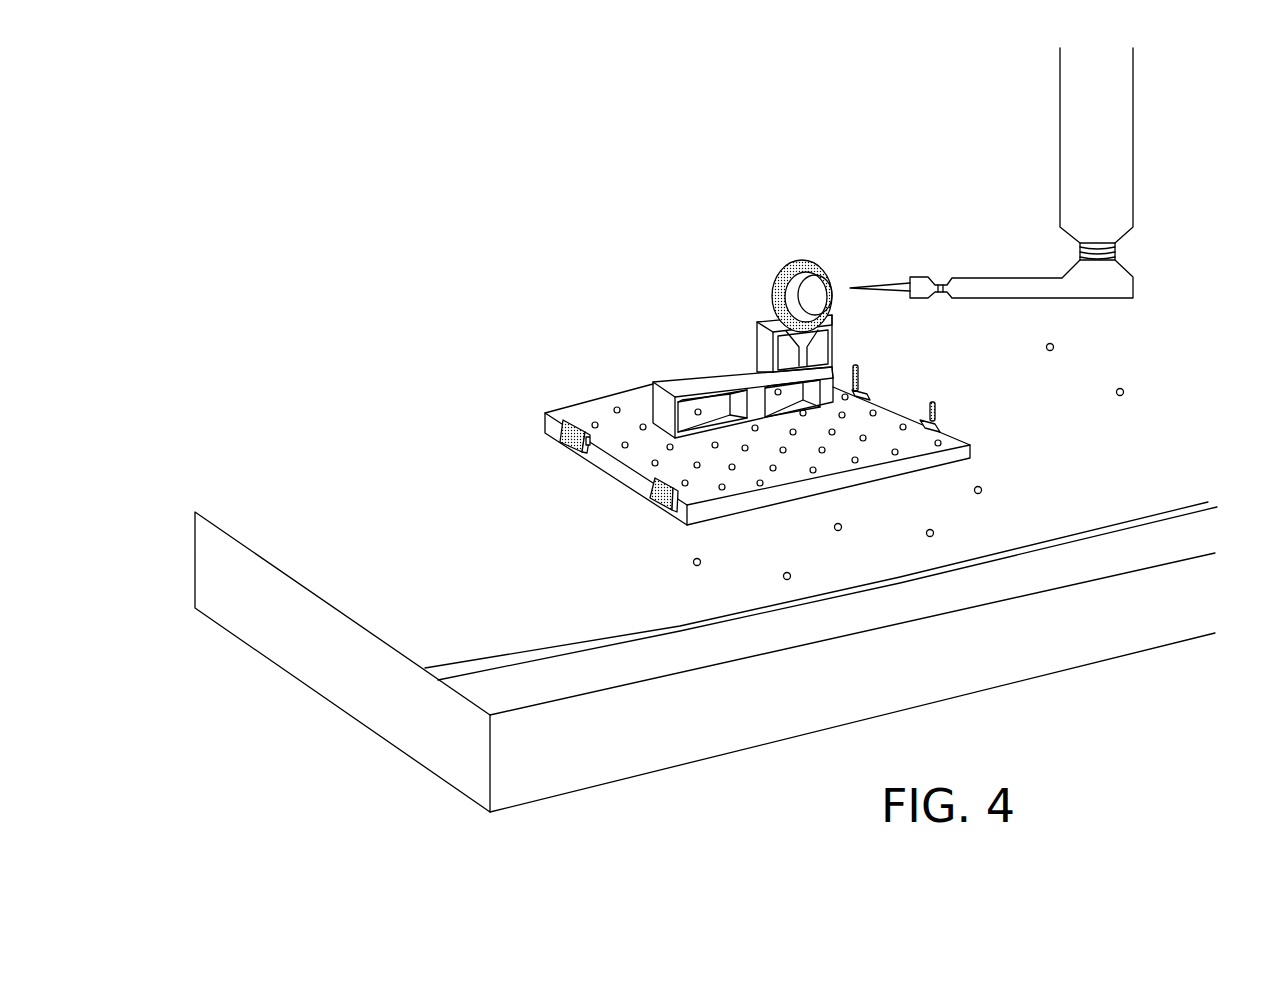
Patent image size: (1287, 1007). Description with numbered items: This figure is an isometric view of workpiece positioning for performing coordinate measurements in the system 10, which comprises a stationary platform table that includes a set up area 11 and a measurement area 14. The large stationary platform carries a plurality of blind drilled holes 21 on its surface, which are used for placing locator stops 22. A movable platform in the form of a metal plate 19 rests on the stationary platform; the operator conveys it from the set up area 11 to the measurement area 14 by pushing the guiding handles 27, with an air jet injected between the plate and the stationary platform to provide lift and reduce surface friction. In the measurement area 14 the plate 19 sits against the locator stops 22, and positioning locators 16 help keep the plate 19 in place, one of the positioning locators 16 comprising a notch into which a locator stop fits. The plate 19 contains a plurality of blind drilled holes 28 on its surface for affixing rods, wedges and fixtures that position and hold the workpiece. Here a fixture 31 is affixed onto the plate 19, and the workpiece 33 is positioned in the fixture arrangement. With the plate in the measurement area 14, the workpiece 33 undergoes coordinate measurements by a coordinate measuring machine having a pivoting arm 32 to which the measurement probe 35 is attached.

The system 10 is at (1190, 348).
The set up area 11 is at (520, 617).
The measurement area 14 is at (1022, 446).
The positioning locators 16 is at (875, 403).
The second movable platform 19 is at (608, 477).
The blind drilled holes 21 is at (700, 566).
The locator stops 22 is at (838, 328).
The guiding handles 27 is at (583, 434).
The blind drilled holes 28 is at (592, 427).
The fixture 31 is at (770, 340).
The pivoting arm 32 is at (1012, 277).
The workpiece 33 is at (778, 268).
The measurement probe 35 is at (852, 285).